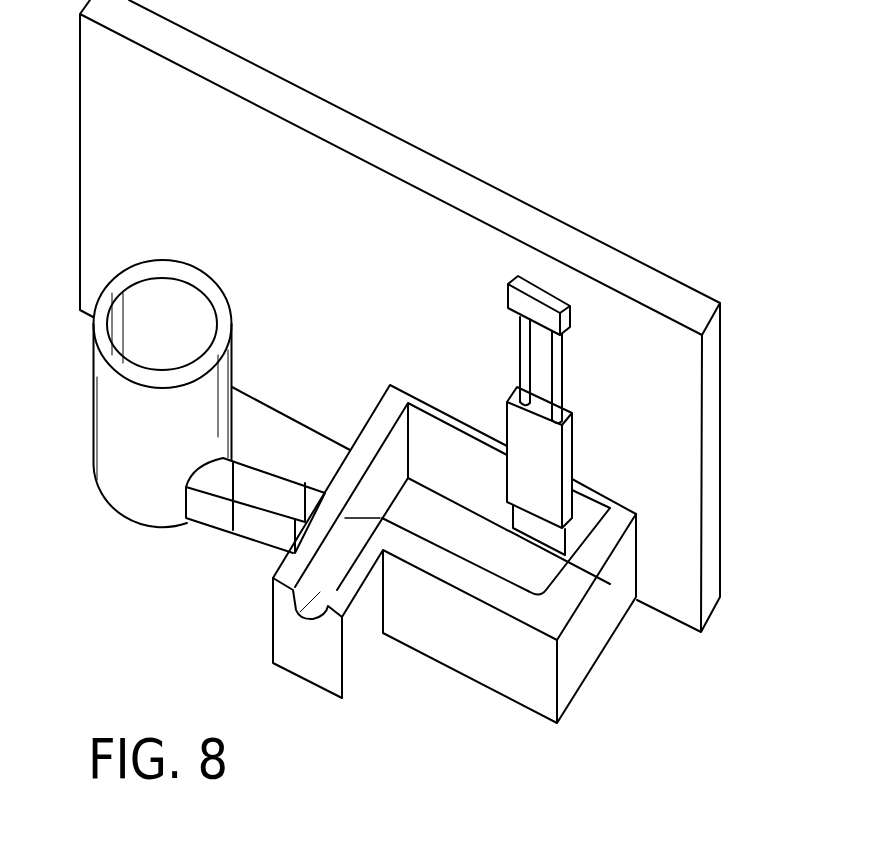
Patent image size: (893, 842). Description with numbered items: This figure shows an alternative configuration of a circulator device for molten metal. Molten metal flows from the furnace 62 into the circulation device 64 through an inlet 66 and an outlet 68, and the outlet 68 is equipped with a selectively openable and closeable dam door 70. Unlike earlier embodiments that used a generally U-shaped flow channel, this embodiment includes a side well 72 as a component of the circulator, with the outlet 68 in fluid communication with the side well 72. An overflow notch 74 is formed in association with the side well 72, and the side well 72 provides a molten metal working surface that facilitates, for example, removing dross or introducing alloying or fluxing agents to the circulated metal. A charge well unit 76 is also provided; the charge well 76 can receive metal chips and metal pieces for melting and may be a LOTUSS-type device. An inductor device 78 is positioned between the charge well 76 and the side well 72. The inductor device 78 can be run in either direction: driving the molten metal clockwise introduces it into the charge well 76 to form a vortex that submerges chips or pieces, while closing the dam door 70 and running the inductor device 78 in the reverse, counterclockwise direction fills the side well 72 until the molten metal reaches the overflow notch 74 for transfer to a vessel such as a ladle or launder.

The furnace 62 is at (135, 153).
The circulation device 64 is at (531, 585).
The inlet 66 is at (218, 473).
The outlet 68 is at (540, 530).
The dam door 70 is at (583, 450).
The side well 72 is at (625, 577).
The overflow notch 74 is at (320, 593).
The charge well unit 76 is at (128, 427).
The inductor device 78 is at (263, 527).